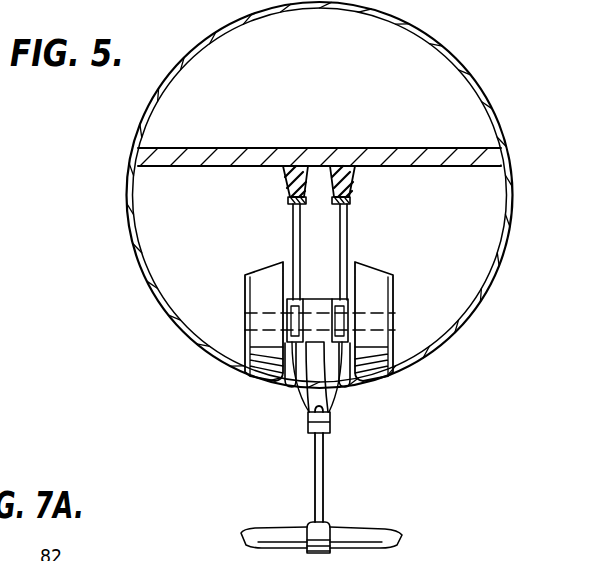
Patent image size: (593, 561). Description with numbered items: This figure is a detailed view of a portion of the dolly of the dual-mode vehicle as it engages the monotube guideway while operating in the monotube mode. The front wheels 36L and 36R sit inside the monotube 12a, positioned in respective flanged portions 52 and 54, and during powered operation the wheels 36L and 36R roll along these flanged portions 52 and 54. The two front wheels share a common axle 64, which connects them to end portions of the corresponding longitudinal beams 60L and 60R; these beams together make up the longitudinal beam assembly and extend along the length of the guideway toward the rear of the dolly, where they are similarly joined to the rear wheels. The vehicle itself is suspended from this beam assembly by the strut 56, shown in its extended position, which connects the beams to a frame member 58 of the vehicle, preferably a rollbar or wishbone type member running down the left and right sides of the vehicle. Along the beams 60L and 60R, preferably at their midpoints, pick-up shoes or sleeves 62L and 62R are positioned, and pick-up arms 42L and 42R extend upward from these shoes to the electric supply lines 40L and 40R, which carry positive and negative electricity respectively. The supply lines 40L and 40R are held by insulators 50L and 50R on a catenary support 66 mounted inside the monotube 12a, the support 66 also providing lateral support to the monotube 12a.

The monotube 12a is at (446, 45).
The catenary support 66 is at (429, 149).
The insulator 50R is at (285, 178).
The insulator 50L is at (356, 178).
The electric supply line 40R is at (288, 201).
The electric supply line 40L is at (351, 201).
The pick-up arm 42R is at (292, 237).
The pick-up arm 42L is at (349, 237).
The pick-up shoe 62R is at (296, 301).
The pick-up shoe 62L is at (335, 299).
The common axle 64 is at (397, 313).
The front wheel 36R is at (247, 273).
The front wheel 36L is at (394, 270).
The flanged portion 54 is at (288, 390).
The flanged portion 52 is at (340, 382).
The longitudinal beam 60R is at (296, 352).
The longitudinal beam 60L is at (332, 425).
The strut 56 is at (325, 433).
The frame member 58 is at (352, 535).